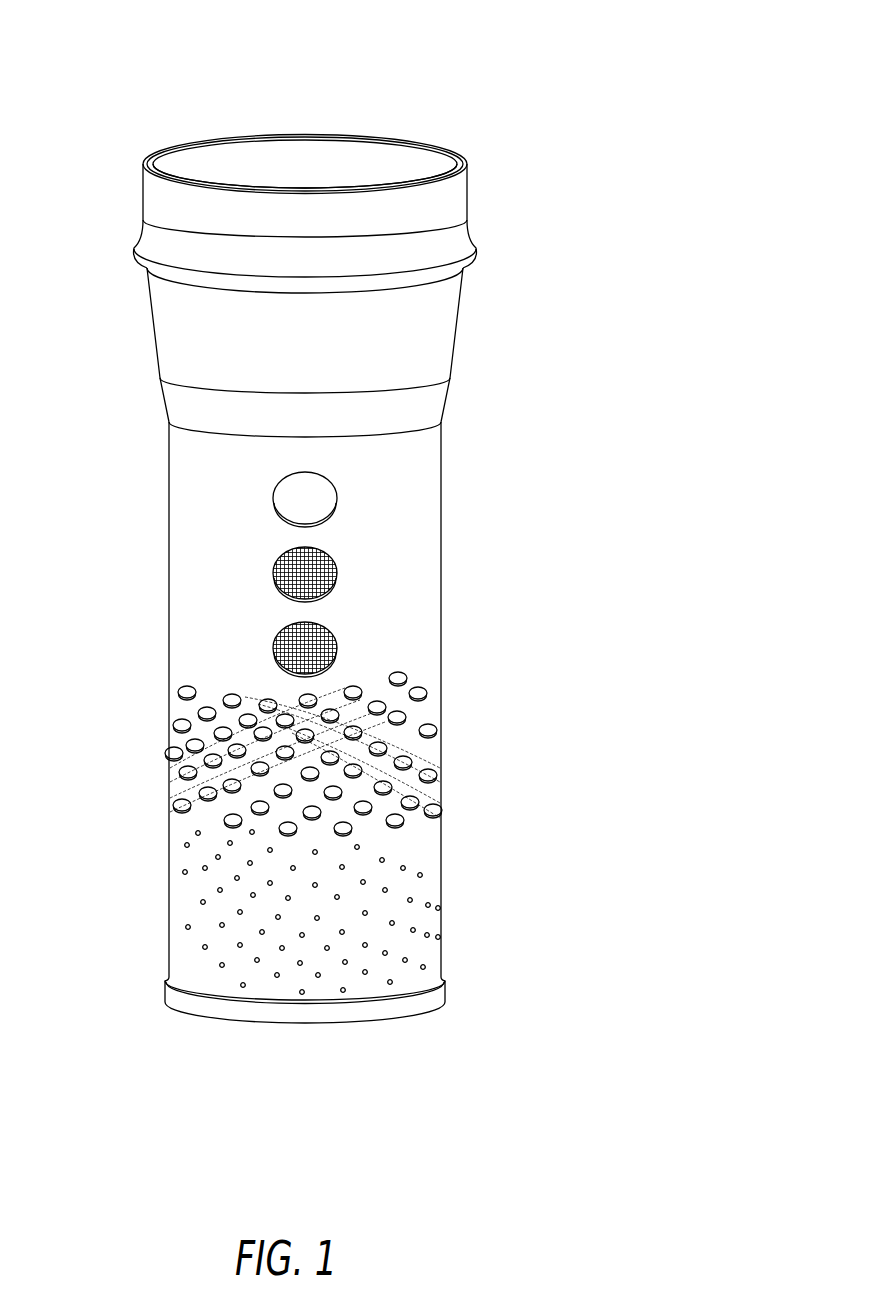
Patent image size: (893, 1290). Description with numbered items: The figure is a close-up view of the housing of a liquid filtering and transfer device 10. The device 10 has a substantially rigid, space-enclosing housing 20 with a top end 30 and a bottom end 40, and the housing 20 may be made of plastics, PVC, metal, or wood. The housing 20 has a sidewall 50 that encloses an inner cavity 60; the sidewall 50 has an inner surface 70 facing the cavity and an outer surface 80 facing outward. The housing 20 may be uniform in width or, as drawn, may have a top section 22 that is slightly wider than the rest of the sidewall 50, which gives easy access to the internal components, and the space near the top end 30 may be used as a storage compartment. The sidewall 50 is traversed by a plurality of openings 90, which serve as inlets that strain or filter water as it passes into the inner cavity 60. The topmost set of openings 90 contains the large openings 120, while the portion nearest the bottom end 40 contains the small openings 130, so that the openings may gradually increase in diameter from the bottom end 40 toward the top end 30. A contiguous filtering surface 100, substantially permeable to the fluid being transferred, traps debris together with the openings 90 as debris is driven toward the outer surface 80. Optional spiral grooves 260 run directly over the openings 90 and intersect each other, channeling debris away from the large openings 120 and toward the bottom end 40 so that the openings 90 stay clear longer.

The liquid filtering and transfer device 10 is at (46, 66).
The housing 20 is at (323, 693).
The top section 22 is at (471, 328).
The top end 30 is at (272, 154).
The bottom end 40 is at (359, 1040).
The sidewall 50 is at (316, 708).
The inner cavity 60 is at (399, 162).
The inner surface 70 is at (248, 170).
The outer surface 80 is at (155, 193).
The openings 90 is at (340, 551).
The filtering surface 100 is at (322, 577).
The large openings 120 is at (322, 497).
The small openings 130 is at (425, 690).
The spiral grooves 260 is at (443, 788).